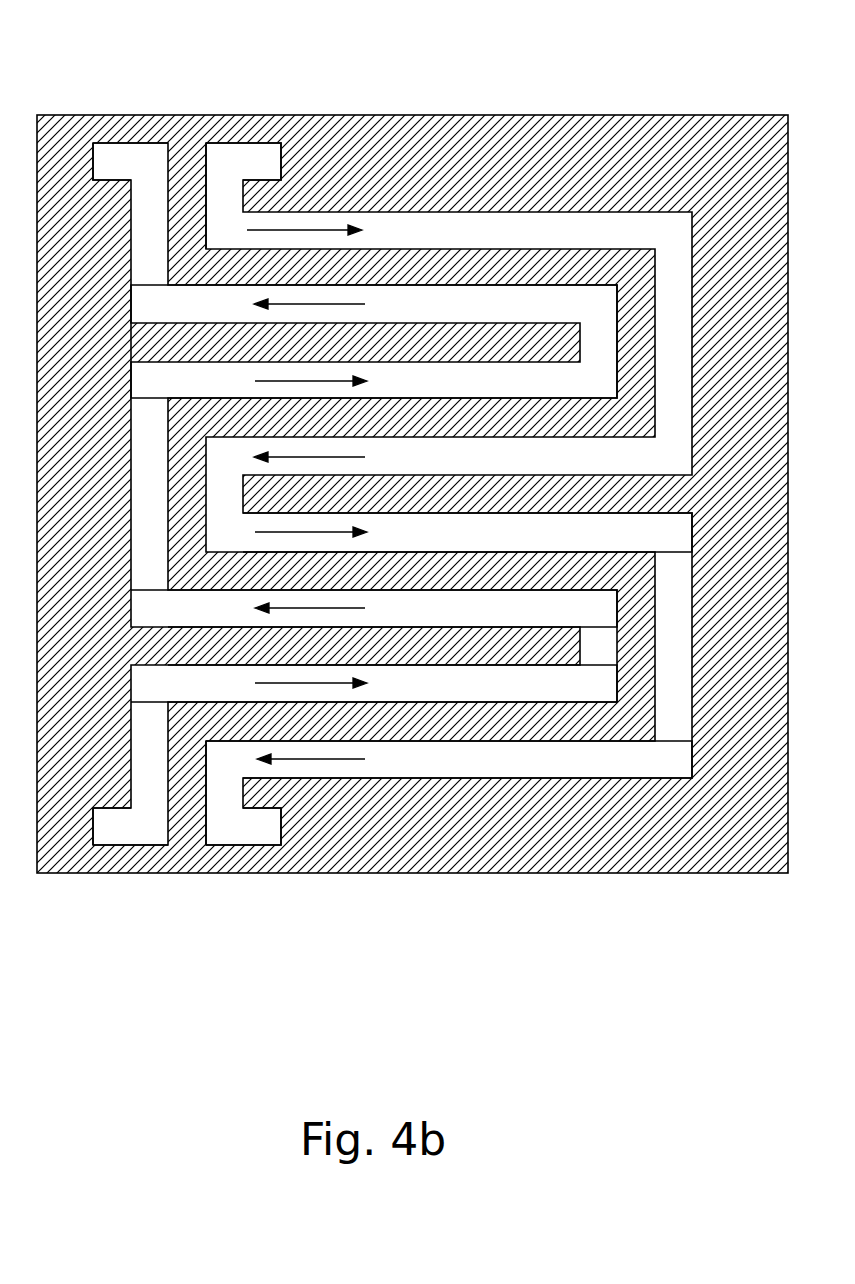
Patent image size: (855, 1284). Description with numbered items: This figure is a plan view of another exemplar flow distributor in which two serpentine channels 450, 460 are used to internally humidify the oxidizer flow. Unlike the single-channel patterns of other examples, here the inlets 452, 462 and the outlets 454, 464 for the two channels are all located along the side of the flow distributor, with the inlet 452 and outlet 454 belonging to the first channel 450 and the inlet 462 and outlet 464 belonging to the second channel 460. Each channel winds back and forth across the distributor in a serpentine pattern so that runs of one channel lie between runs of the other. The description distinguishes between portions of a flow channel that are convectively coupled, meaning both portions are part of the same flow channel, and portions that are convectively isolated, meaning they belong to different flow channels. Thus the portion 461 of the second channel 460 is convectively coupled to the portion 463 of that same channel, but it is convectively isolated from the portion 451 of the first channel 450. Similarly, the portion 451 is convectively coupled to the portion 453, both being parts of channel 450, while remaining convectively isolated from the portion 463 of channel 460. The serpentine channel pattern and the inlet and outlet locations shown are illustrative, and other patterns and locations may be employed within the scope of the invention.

The channel 450 is at (523, 308).
The portion 451 is at (503, 683).
The inlet 452 is at (136, 830).
The portion 453 is at (542, 608).
The outlet 454 is at (140, 162).
The channel 460 is at (640, 228).
The portion 461 is at (410, 758).
The inlet 462 is at (253, 162).
The portion 463 is at (635, 533).
The outlet 464 is at (250, 830).